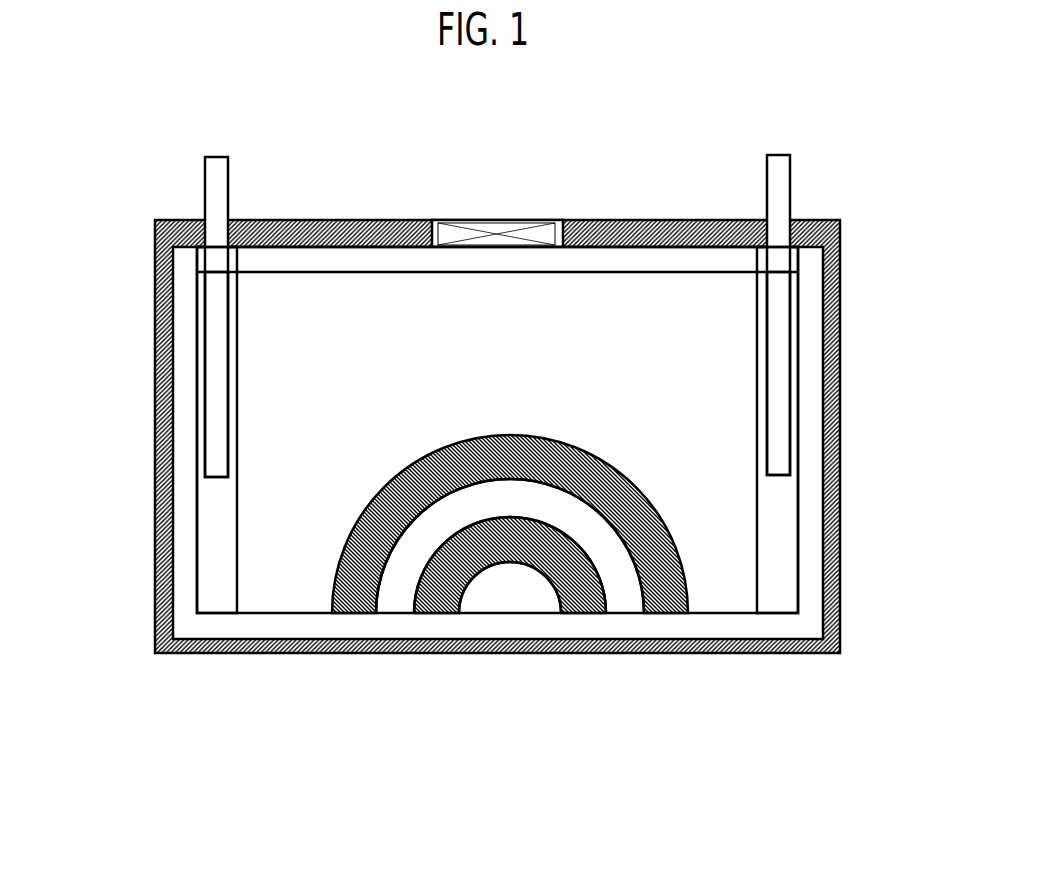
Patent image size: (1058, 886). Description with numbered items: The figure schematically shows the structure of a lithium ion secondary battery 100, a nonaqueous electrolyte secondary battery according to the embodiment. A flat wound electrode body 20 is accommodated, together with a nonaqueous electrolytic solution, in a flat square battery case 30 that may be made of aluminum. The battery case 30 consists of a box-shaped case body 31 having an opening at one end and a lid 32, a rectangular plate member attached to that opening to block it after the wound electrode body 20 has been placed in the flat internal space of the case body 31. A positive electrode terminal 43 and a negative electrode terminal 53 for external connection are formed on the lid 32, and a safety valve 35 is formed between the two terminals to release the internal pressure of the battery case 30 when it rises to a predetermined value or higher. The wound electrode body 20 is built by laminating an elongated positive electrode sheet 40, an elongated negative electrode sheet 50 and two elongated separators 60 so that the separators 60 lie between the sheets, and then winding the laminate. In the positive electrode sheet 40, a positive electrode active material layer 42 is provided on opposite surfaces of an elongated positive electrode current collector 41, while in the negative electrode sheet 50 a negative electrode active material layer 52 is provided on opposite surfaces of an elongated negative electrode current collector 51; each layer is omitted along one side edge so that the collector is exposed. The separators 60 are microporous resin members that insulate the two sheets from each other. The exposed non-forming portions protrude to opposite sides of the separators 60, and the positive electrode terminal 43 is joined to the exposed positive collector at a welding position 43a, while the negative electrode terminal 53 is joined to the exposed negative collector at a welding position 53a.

The lithium ion secondary battery 100 is at (97, 149).
The wound electrode body 20 is at (486, 404).
The battery case 30 is at (520, 420).
The case body 31 is at (245, 645).
The lid 32 is at (645, 235).
The safety valve 35 is at (497, 220).
The positive electrode sheet 40 is at (513, 584).
The positive electrode current collector 41 is at (215, 518).
The positive electrode active material layer 42 is at (665, 588).
The positive electrode terminal 43 is at (140, 274).
The welding position 43a is at (217, 373).
The negative electrode sheet 50 is at (528, 627).
The negative electrode current collector 51 is at (782, 515).
The negative electrode active material layer 52 is at (583, 592).
The negative electrode terminal 53 is at (812, 299).
The welding position 53a is at (777, 424).
The separator 60 is at (390, 593).